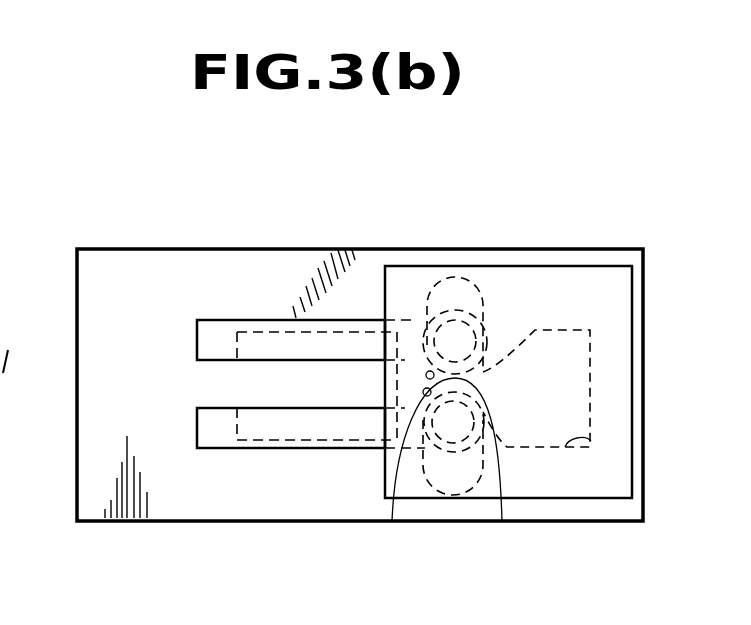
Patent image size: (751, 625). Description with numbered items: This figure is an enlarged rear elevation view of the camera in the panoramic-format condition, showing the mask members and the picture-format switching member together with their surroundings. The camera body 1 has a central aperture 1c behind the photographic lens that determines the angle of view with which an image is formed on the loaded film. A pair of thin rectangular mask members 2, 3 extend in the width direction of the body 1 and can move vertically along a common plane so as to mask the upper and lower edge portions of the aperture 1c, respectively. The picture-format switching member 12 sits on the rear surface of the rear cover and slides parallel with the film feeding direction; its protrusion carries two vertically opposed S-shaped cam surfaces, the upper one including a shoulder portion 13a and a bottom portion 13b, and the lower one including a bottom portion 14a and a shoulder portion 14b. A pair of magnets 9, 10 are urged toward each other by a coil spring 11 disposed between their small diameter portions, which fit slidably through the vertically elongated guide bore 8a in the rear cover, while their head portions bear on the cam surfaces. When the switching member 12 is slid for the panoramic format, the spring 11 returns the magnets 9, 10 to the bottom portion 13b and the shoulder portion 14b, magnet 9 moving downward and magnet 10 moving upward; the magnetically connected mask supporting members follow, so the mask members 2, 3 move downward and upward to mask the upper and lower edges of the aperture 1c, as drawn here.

The body 1 is at (128, 262).
The aperture 1c is at (254, 386).
The mask member 2 is at (215, 337).
The mask member 3 is at (218, 440).
The guide bore 8a is at (475, 290).
The magnet 9 is at (477, 339).
The magnet 10 is at (458, 437).
The coil spring 11 is at (502, 522).
The picture-format switching member 12 is at (607, 283).
The shoulder portion 13a is at (568, 330).
The bottom portion 13b is at (430, 375).
The bottom portion 14a is at (592, 440).
The shoulder portion 14b is at (427, 392).